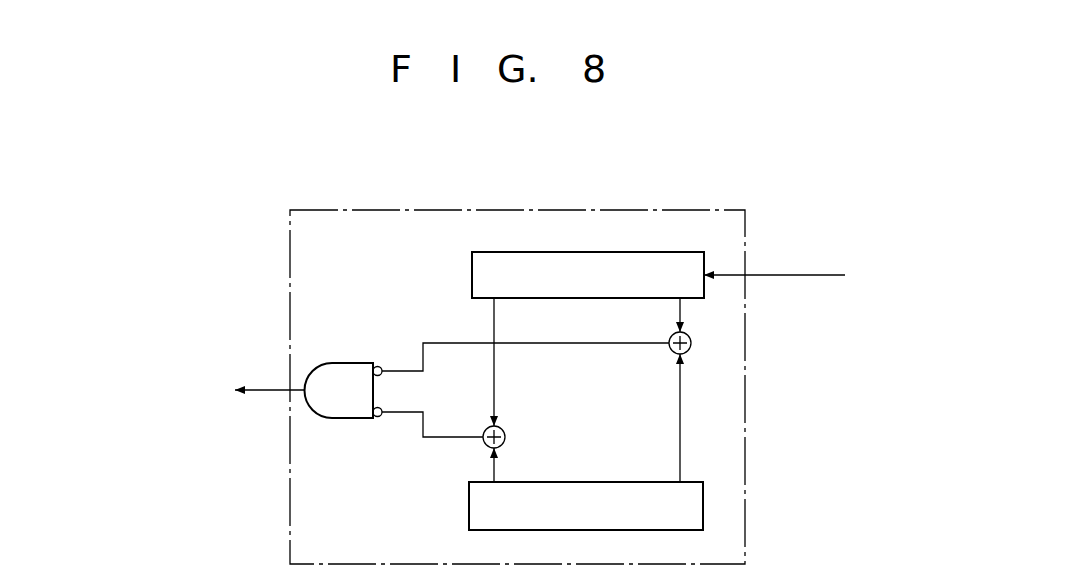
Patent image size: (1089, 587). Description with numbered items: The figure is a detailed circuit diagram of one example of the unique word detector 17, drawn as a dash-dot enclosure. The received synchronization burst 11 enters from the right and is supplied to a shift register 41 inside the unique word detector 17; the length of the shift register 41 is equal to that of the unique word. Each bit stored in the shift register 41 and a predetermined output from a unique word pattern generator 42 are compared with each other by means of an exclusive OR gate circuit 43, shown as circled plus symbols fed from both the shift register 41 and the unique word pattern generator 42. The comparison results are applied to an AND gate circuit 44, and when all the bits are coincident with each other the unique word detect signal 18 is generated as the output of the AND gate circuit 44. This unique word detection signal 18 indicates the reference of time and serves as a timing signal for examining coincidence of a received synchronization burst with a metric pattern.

The unique word detector 17 is at (510, 209).
The shift register 41 is at (536, 252).
The unique word pattern generator 42 is at (606, 482).
The exclusive OR gate circuit 43 is at (504, 440).
The AND gate circuit 44 is at (337, 363).
The synchronization burst 11 is at (752, 275).
The unique word detection signal 18 is at (273, 390).